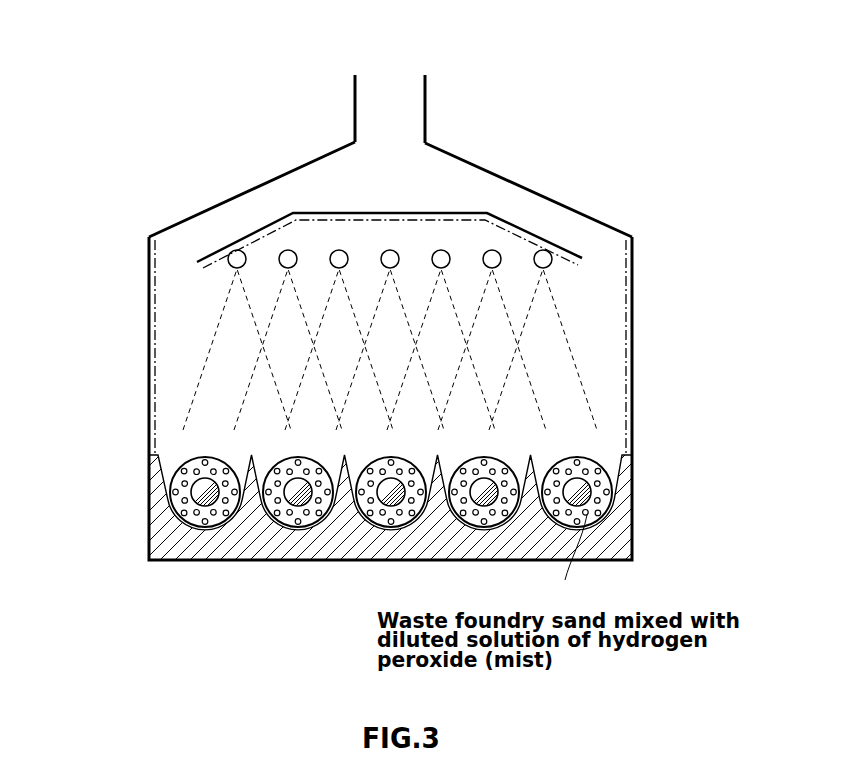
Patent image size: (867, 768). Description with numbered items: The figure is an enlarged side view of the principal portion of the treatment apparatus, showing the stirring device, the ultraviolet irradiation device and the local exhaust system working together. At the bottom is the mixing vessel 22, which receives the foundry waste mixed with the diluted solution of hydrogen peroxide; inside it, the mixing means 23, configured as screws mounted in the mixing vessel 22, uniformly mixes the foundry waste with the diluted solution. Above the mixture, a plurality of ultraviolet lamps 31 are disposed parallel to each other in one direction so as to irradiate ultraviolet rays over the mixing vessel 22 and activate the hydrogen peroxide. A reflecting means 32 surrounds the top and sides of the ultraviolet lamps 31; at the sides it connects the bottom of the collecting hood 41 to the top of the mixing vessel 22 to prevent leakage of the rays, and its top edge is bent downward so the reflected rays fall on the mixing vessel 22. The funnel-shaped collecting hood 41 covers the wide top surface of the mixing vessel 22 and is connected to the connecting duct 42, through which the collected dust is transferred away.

The mixing vessel 22 is at (268, 560).
The mixing means 23 is at (190, 480).
The ultraviolet lamp 31 is at (545, 265).
The reflecting means 32 is at (155, 280).
The collecting hood 41 is at (237, 196).
The connecting duct 42 is at (355, 110).